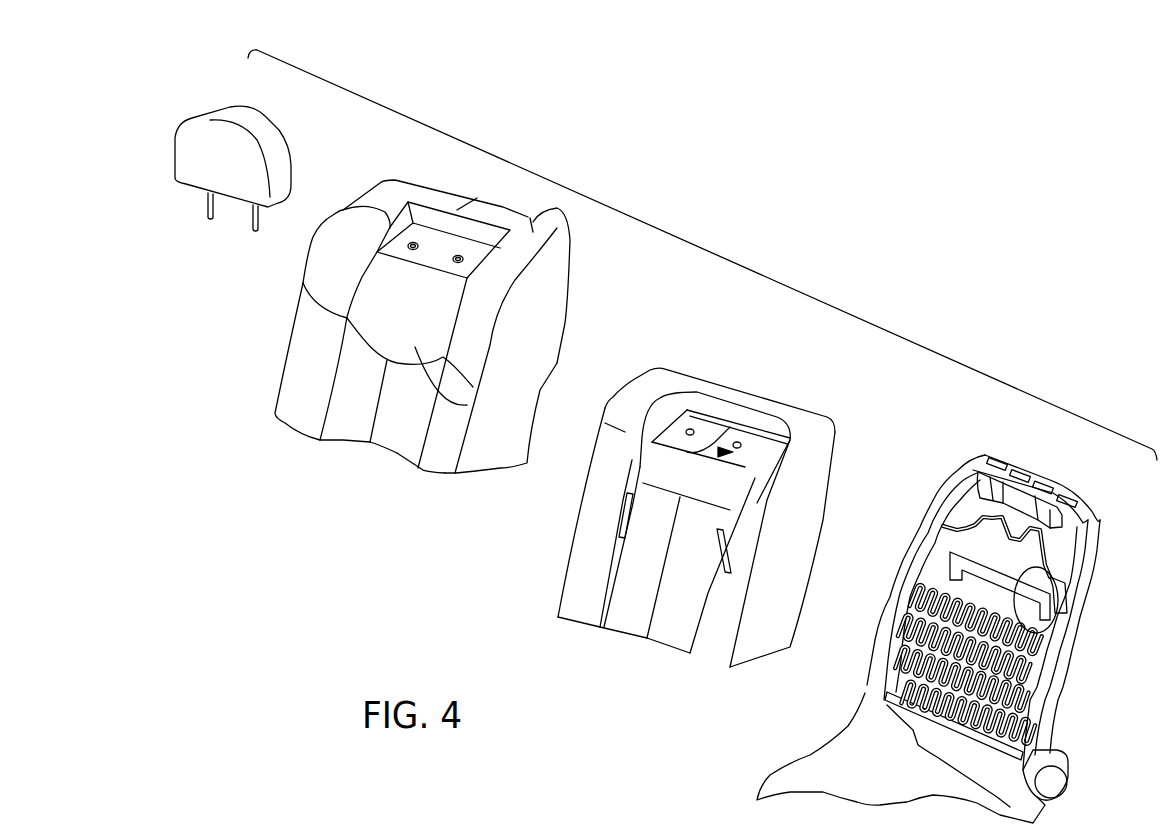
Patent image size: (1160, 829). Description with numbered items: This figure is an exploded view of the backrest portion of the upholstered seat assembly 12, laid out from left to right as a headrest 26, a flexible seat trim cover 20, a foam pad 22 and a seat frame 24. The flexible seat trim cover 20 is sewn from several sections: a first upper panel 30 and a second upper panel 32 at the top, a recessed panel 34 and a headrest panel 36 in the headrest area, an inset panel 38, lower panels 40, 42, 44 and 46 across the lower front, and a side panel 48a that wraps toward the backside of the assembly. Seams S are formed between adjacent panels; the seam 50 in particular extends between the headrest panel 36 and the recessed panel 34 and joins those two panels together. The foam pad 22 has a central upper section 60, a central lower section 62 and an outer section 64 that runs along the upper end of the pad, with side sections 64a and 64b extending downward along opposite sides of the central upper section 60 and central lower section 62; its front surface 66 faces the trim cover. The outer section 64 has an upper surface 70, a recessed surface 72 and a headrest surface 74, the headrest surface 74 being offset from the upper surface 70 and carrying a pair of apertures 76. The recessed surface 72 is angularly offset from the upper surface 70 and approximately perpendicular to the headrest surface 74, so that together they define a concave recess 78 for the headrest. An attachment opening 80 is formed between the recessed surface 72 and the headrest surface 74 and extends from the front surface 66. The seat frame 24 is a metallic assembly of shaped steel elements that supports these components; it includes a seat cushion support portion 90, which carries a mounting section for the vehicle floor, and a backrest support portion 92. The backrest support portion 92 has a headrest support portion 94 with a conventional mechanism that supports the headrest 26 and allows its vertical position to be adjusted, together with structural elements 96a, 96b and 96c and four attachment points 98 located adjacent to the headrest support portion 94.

The upholstered seat assembly 12 is at (737, 266).
The flexible seat trim cover 20 is at (444, 328).
The foam pad 22 is at (715, 515).
The seat frame 24 is at (951, 619).
The headrest 26 is at (273, 151).
The first upper panel 30 is at (387, 192).
The second upper panel 32 is at (572, 209).
The recessed panel 34 is at (477, 232).
The headrest panel 36 is at (420, 237).
The inset panel 38 is at (463, 407).
The lower panel 40 is at (298, 402).
The lower panel 42 is at (350, 422).
The lower panel 44 is at (398, 428).
The lower panel 46 is at (437, 452).
The side panel 48a is at (500, 442).
The seam 50 is at (437, 227).
The seam S is at (343, 210).
The central upper section 60 is at (730, 490).
The central lower section 62 is at (673, 627).
The outer section 64 is at (812, 413).
The side section 64a is at (713, 647).
The side section 64b is at (583, 597).
The front surface 66 is at (630, 617).
The upper surface 70 is at (765, 398).
The recessed surface 72 is at (745, 417).
The headrest surface 74 is at (712, 433).
The apertures 76 is at (690, 429).
The recess 78 is at (718, 452).
The attachment opening 80 is at (687, 452).
The seat cushion support portion 90 is at (833, 767).
The backrest support portion 92 is at (1068, 667).
The headrest support portion 94 is at (1017, 500).
The structural element 96a is at (1043, 553).
The structural element 96b is at (1053, 573).
The structural element 96c is at (1045, 636).
The attachment point 98 is at (1030, 470).